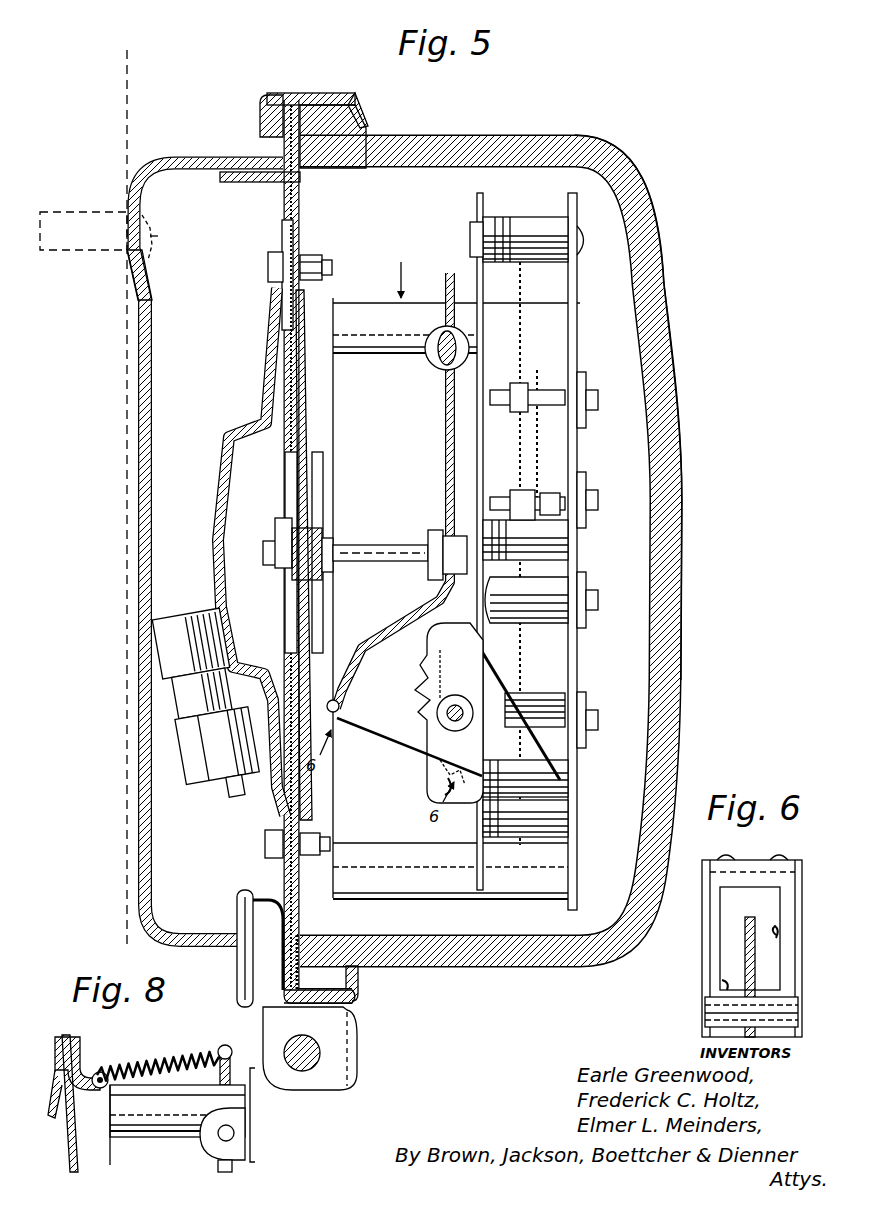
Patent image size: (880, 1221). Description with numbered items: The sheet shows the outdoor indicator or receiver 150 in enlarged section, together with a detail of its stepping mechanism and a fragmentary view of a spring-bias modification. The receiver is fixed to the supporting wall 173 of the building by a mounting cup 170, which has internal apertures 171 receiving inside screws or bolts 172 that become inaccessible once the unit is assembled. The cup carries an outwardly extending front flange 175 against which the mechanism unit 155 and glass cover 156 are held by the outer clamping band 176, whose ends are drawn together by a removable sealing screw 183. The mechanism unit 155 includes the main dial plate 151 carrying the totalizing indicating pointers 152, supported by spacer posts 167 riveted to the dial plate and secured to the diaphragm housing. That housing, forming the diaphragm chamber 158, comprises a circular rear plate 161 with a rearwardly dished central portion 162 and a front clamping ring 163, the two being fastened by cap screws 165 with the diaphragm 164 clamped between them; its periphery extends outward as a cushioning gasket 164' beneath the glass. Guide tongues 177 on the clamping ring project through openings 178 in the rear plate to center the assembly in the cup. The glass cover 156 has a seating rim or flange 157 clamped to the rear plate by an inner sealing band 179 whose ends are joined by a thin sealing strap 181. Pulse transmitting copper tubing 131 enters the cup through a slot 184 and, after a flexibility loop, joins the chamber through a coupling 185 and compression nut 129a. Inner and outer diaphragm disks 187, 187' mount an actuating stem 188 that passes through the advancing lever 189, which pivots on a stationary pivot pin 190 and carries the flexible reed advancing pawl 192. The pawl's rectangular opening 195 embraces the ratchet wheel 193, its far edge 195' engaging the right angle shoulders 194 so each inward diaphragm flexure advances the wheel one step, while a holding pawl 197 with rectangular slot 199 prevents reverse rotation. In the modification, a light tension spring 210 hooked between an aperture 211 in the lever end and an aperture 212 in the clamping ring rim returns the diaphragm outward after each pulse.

In FIG. 5, the outdoor indicator or receiver 150 is at (524, 132).
In FIG. 5, the main dial plate 151 is at (572, 283).
In FIG. 5, the totalizing indicating pointers 152 is at (588, 382).
In FIG. 5, the mechanism unit 155 is at (396, 270).
In FIG. 5, the glass cover 156 is at (640, 176).
In FIG. 5, the seating rim or flange 157 is at (358, 976).
In FIG. 5, the diaphragm chamber 158 is at (275, 388).
In FIG. 5, the circular rear plate 161 is at (282, 208).
In FIG. 5, the rearwardly dished central portion 162 is at (220, 517).
In FIG. 5, the front plate or clamping ring 163 is at (306, 205).
In FIG. 8, the front plate or clamping ring 163 is at (79, 1043).
In FIG. 5, the diaphragm 164 is at (336, 607).
In FIG. 8, the diaphragm 164 is at (58, 1104).
In FIG. 5, the cushioning gasket 164' is at (329, 947).
In FIG. 5, the cap screws 165 is at (268, 272).
In FIG. 5, the spacer posts 167 is at (400, 331).
In FIG. 5, the mounting cup 170 is at (190, 157).
In FIG. 5, the internal apertures 171 is at (127, 250).
In FIG. 5, the inside screws or bolts 172 is at (152, 238).
In FIG. 5, the supporting wall 173 is at (150, 73).
In FIG. 5, the front flange 175 is at (271, 95).
In FIG. 5, the clamping band 176 is at (310, 93).
In FIG. 5, the guide tongues 177 is at (228, 182).
In FIG. 5, the openings 178 is at (298, 165).
In FIG. 5, the inner clamping or sealing band 179 is at (352, 95).
In FIG. 5, the sealing strap 181 is at (316, 1003).
In FIG. 5, the sealing screw 183 is at (320, 1051).
In FIG. 5, the slot 184 is at (236, 932).
In FIG. 5, the coupling 185 is at (203, 618).
In FIG. 5, the compression nut 129a is at (198, 778).
In FIG. 5, the pulse transmitting copper tubing 131 is at (218, 795).
In FIG. 5, the inner diaphragm cup or disk 187 is at (270, 552).
In FIG. 5, the outer diaphragm cup or disk 187' is at (345, 552).
In FIG. 5, the actuating stem or spindle 188 is at (378, 545).
In FIG. 5, the advancing lever 189 is at (445, 452).
In FIG. 6, the advancing lever 189 is at (701, 879).
In FIG. 8, the advancing lever 189 is at (220, 1093).
In FIG. 5, the stationary pivot pin 190 is at (441, 367).
In FIG. 8, the stationary pivot pin 190 is at (222, 1138).
In FIG. 5, the advancing pawl 192 is at (336, 722).
In FIG. 6, the advancing pawl 192 is at (700, 1008).
In FIG. 5, the ratchet wheel 193 is at (425, 683).
In FIG. 6, the ratchet wheel 193 is at (748, 965).
In FIG. 5, the right angle shoulders 194 is at (410, 753).
In FIG. 5, the rectangular opening 195 is at (409, 733).
In FIG. 6, the rectangular opening 195 is at (804, 942).
In FIG. 5, the far edge 195' is at (413, 796).
In FIG. 6, the far edge 195' is at (687, 980).
In FIG. 5, the holding pawl 197 is at (560, 700).
In FIG. 5, the rectangular slot 199 is at (522, 697).
In FIG. 8, the light tension spring 210 is at (145, 1050).
In FIG. 8, the aperture 211 is at (218, 1071).
In FIG. 8, the aperture 212 is at (97, 1086).